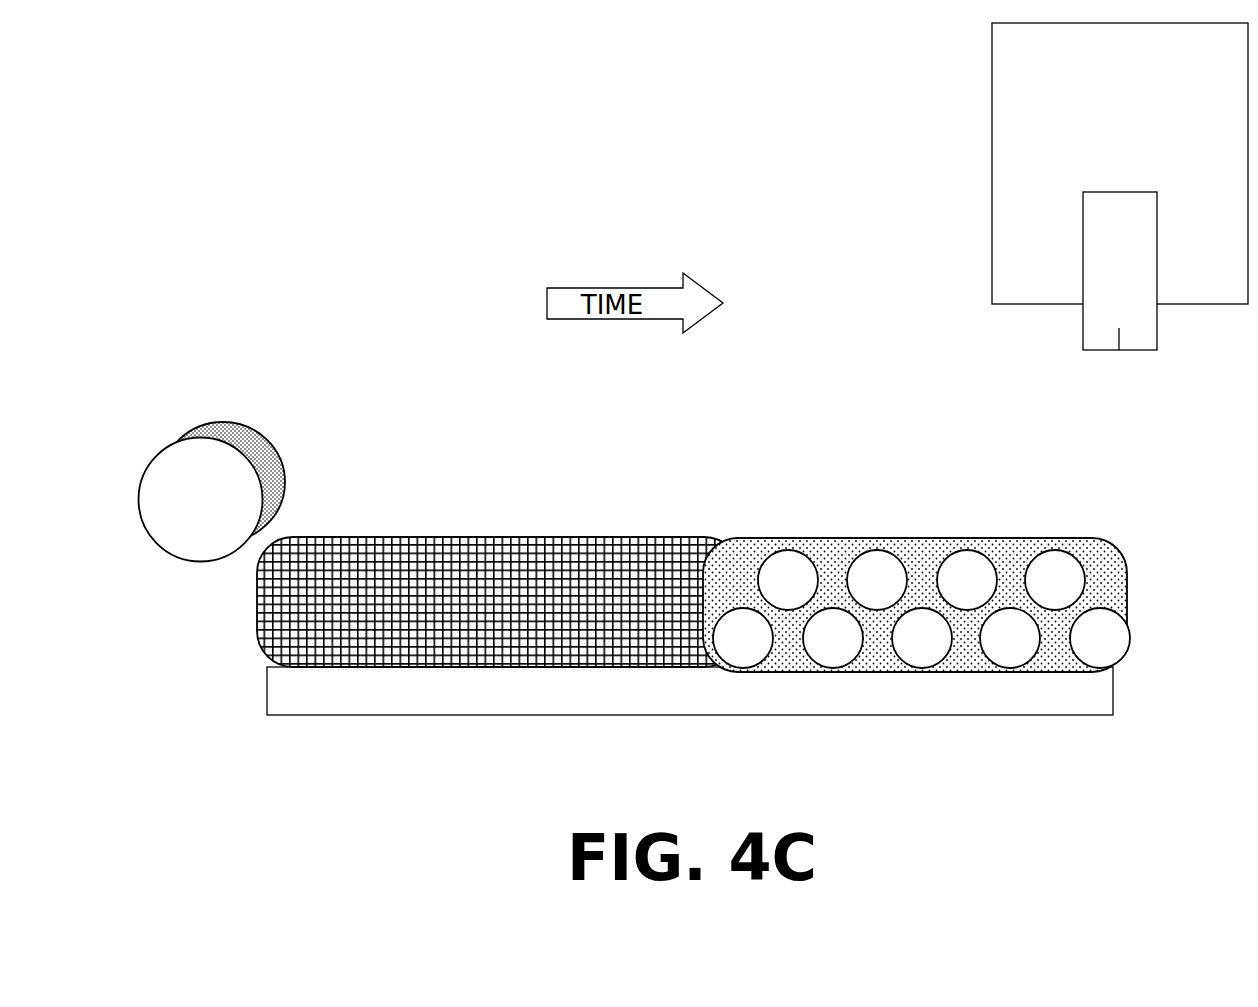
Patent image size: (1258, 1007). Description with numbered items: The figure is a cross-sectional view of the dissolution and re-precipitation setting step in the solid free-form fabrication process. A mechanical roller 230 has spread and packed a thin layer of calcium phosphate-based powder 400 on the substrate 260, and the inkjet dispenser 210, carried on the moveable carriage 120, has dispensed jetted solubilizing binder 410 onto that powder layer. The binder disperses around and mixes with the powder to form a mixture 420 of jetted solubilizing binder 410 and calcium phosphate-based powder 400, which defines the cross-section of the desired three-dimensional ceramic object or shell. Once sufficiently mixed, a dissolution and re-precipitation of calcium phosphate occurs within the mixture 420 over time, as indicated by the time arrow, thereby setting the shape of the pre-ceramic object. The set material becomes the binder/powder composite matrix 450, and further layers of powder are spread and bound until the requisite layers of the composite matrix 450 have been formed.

The moveable carriage 120 is at (1137, 86).
The inkjet dispenser 210 is at (1103, 265).
The mechanical roller 230 is at (202, 500).
The substrate 260 is at (930, 715).
The calcium phosphate-based powder 400 is at (1053, 582).
The jetted solubilizing binder 410 is at (1102, 582).
The mixture 420 is at (957, 525).
The binder/powder composite matrix 450 is at (590, 537).